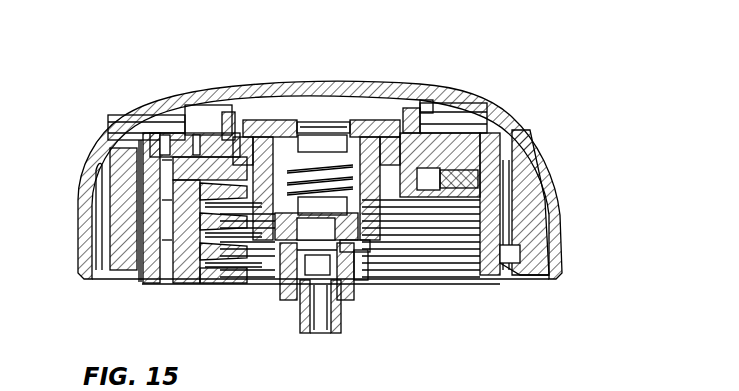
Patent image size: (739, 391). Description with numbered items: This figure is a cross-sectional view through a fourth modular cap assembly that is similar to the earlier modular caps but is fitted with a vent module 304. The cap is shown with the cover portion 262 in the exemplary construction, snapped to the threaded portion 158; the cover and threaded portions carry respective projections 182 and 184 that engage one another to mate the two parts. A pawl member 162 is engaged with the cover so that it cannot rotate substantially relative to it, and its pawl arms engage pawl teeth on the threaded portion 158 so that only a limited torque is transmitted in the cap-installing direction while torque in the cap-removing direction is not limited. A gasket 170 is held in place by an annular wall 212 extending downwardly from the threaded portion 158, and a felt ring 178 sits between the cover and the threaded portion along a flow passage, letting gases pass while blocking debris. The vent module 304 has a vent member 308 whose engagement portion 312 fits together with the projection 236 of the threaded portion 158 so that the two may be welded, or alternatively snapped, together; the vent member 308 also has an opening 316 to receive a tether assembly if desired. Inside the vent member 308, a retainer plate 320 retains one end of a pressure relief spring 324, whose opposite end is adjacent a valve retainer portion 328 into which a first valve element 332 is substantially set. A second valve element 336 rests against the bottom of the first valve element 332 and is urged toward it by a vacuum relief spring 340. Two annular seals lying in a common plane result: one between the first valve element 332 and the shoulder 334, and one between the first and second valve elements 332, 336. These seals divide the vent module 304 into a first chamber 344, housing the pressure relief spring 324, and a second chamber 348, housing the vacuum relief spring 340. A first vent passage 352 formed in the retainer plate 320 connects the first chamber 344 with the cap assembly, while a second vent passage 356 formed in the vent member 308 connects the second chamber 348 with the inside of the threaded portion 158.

The threaded portion 158 is at (487, 155).
The pawl member 162 is at (223, 93).
The gasket 170 is at (472, 180).
The felt ring 178 is at (523, 240).
The projection 182 is at (520, 273).
The projection 184 is at (513, 243).
The annular wall 212 is at (143, 213).
The projection 236 is at (433, 97).
The cover portion 262 is at (453, 93).
The vent module 304 is at (324, 110).
The vent member 308 is at (288, 262).
The engagement portion 312 is at (430, 205).
The opening 316 is at (314, 300).
The retainer plate 320 is at (357, 118).
The pressure relief spring 324 is at (283, 118).
The valve retainer portion 328 is at (262, 232).
The first valve element 332 is at (415, 195).
The shoulder 334 is at (280, 245).
The second valve element 336 is at (328, 300).
The vacuum relief spring 340 is at (356, 265).
The first chamber 344 is at (408, 130).
The second chamber 348 is at (300, 273).
The first vent passage 352 is at (312, 118).
The gasket 356 is at (345, 287).